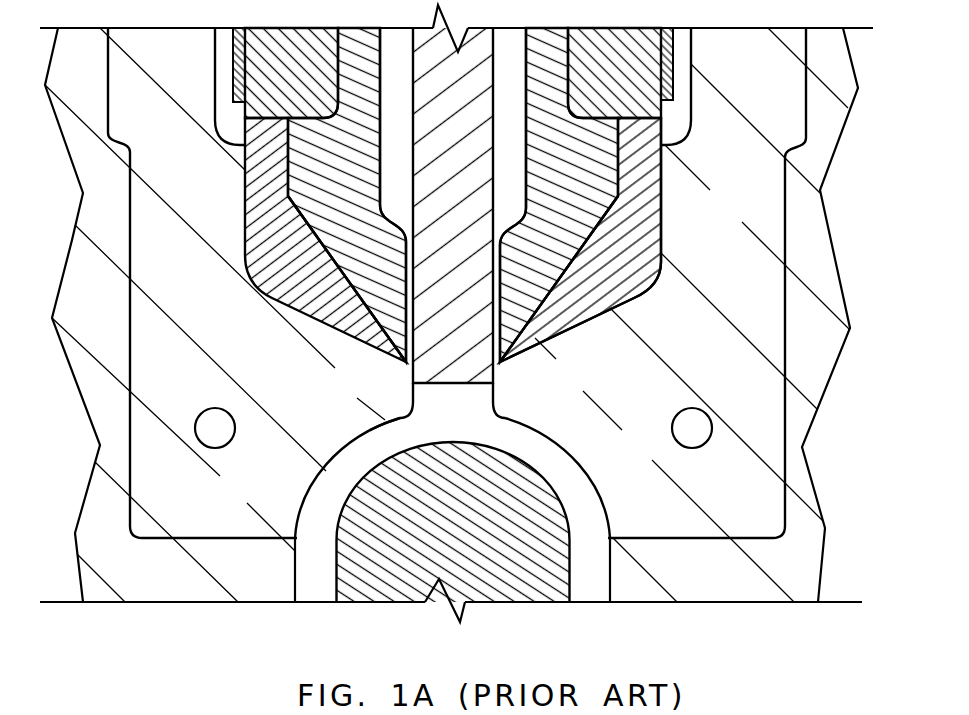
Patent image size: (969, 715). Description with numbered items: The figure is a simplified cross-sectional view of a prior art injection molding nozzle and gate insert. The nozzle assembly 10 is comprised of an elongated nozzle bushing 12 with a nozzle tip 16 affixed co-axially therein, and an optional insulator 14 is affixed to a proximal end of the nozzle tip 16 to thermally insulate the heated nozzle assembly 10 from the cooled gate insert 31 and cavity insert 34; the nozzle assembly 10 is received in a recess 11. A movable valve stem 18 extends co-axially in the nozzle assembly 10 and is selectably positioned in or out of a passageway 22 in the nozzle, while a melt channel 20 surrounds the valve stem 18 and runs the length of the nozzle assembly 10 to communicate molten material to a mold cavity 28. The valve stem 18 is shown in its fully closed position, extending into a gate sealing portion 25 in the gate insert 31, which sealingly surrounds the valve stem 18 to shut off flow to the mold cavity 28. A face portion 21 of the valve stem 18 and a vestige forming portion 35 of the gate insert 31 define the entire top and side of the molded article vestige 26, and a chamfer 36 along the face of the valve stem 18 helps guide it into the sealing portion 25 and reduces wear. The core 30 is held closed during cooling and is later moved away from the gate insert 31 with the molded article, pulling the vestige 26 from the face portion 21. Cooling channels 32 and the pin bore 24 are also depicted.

The nozzle assembly 10 is at (214, 315).
The recess 11 is at (664, 243).
The nozzle bushing 12 is at (692, 67).
The insulator 14 is at (663, 207).
The nozzle tip 16 is at (597, 170).
The valve stem 18 is at (618, 312).
The melt channel 20 is at (393, 178).
The face portion 21 is at (457, 386).
The passageway 22 is at (470, 260).
The pin bore 24 is at (500, 323).
The gate sealing portion 25 is at (500, 364).
The vestige 26 is at (484, 398).
The mold cavity 28 is at (570, 480).
The core 30 is at (439, 515).
The gate insert 31 is at (787, 468).
The cooling channel 32 is at (221, 441).
The cavity insert 34 is at (800, 555).
The vestige forming portion 35 is at (417, 407).
The chamfer 36 is at (413, 387).